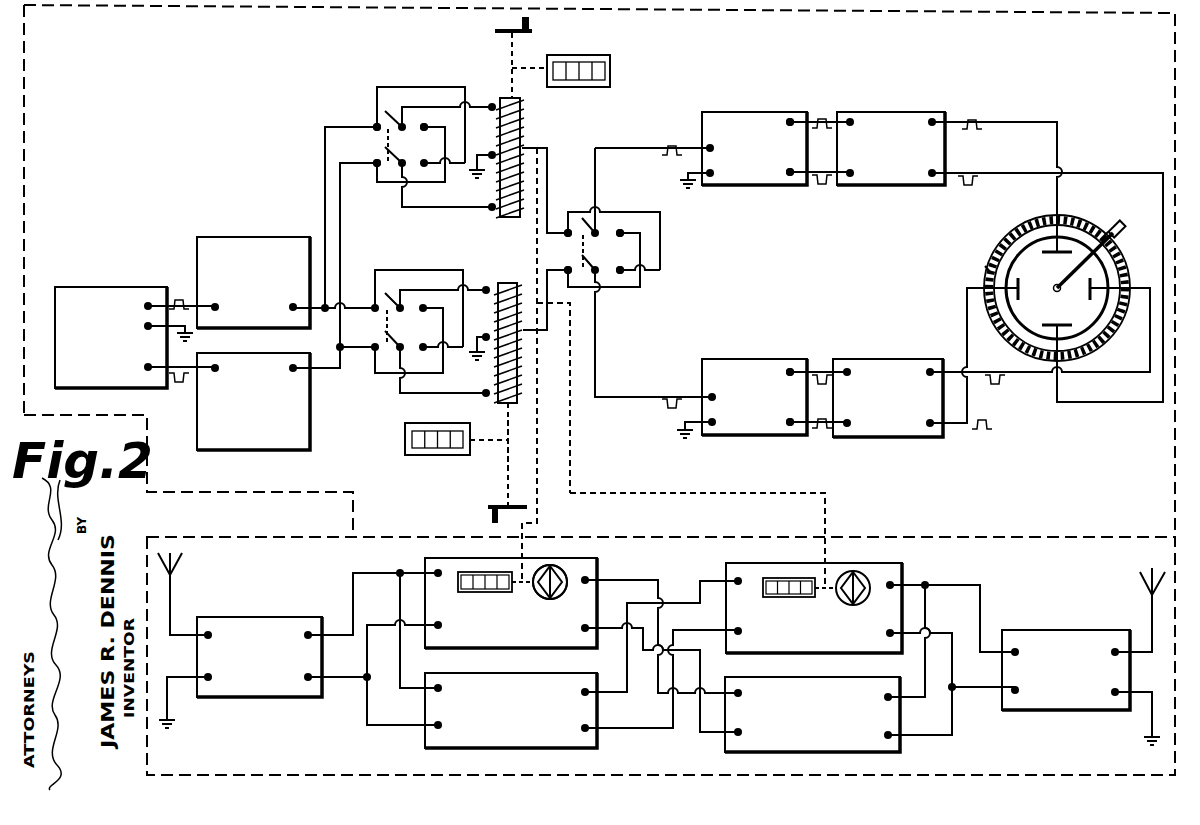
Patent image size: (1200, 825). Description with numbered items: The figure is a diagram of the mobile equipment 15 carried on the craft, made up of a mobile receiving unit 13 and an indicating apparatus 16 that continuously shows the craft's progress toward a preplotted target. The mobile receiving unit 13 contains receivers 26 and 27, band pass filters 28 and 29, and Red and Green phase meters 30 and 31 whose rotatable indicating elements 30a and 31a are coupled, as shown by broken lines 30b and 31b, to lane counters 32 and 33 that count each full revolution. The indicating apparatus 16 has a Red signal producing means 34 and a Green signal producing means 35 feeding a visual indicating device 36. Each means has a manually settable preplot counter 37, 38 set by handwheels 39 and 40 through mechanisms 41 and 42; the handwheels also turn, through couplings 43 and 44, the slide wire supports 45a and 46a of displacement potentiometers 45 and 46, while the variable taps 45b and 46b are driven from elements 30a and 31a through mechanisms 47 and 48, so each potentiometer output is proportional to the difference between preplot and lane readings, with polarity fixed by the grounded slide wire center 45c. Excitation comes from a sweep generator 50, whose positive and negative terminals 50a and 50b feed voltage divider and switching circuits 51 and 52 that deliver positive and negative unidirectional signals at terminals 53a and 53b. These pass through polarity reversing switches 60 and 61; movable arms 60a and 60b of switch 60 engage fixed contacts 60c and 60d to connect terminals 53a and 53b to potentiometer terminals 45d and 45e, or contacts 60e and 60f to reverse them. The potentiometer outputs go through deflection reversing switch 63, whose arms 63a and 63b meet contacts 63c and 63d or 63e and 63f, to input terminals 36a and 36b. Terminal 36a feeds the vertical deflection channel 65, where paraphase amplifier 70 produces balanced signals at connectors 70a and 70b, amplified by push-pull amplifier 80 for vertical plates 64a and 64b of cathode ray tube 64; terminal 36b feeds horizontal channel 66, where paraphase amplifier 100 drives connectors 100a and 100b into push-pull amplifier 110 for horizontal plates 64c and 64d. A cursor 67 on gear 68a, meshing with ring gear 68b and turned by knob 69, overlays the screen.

The mobile receiving unit 13 is at (661, 657).
The mobile equipment 15 is at (188, 476).
The indicating apparatus 16 is at (599, 271).
The receiver 26 is at (1082, 632).
The receiver 27 is at (277, 615).
The band pass filter 28 is at (890, 742).
The band pass filter 29 is at (425, 738).
The Red phase meter 30 is at (900, 650).
The rotatable indicating element 30a is at (870, 578).
The mechanical coupling 30b is at (840, 577).
The Green phase meter 31 is at (600, 613).
The rotatable indicating element 31a is at (565, 572).
The mechanical coupling 31b is at (538, 572).
The counter 32 is at (770, 577).
The counter 33 is at (465, 571).
The signal producing means 34 is at (531, 52).
The signal producing means 35 is at (575, 400).
The visual indicating device 36 is at (828, 104).
The input terminal 36a is at (708, 146).
The input terminal 36b is at (710, 395).
The preplot counter 37 is at (606, 56).
The preplot counter 38 is at (449, 420).
The handwheel 39 is at (496, 29).
The handwheel 40 is at (490, 506).
The mechanism 41 is at (535, 75).
The mechanism 42 is at (505, 424).
The coupling means 43 is at (509, 80).
The coupling means 44 is at (521, 420).
The displacement potentiometer 45 is at (493, 118).
The slide wire support 45a is at (528, 97).
The variable tap 45b is at (527, 148).
The ground connection 45c is at (478, 181).
The potentiometer terminal 45d is at (508, 92).
The potentiometer terminal 45e is at (492, 210).
The displacement potentiometer 46 is at (492, 305).
The slide wire support 46a is at (507, 283).
The variable tap 46b is at (527, 333).
The mechanism 47 is at (696, 492).
The mechanism 48 is at (540, 504).
The sweep generator 50 is at (107, 390).
The positive output terminal 50a is at (152, 302).
The negative output terminal 50b is at (148, 371).
The voltage divider network and switching means 51 is at (238, 238).
The voltage divider network and switching means 52 is at (246, 450).
The positive terminal 53a is at (330, 300).
The negative terminal 53b is at (312, 370).
The polarity reversing switch 60 is at (368, 88).
The movable arm 60a is at (386, 110).
The movable arm 60b is at (375, 162).
The fixed contact 60c is at (375, 125).
The fixed contact 60d is at (365, 164).
The stationary contact 60e is at (427, 125).
The stationary contact 60f is at (404, 184).
The polarity reversing switch 61 is at (402, 266).
The deflection reversing switch 63 is at (628, 196).
The movable arm 63a is at (583, 215).
The movable arm 63b is at (586, 290).
The fixed contact 63c is at (568, 230).
The fixed contact 63d is at (568, 268).
The stationary contact 63e is at (622, 232).
The stationary contact 63f is at (622, 268).
The cathode ray tube 64 is at (1010, 243).
The upper vertical deflection plate 64a is at (1060, 248).
The lower vertical deflection plate 64b is at (1040, 330).
The horizontal deflection plate 64c is at (1020, 280).
The horizontal deflection plate 64d is at (1092, 301).
The vertical deflection channel 65 is at (913, 104).
The horizontal deflection channel 66 is at (895, 448).
The cursor 67 is at (1070, 273).
The gear 68a is at (1109, 240).
The ring gear 68b is at (986, 270).
The adjusting knob 69 is at (1121, 226).
The paraphase amplifier 70 is at (746, 110).
The output connector 70a is at (792, 118).
The output connector 70b is at (792, 176).
The push-pull amplifier 80 is at (897, 185).
The paraphase amplifier 100 is at (763, 358).
The signal connector 100a is at (792, 368).
The signal connector 100b is at (794, 428).
The push-pull amplifier 110 is at (931, 360).